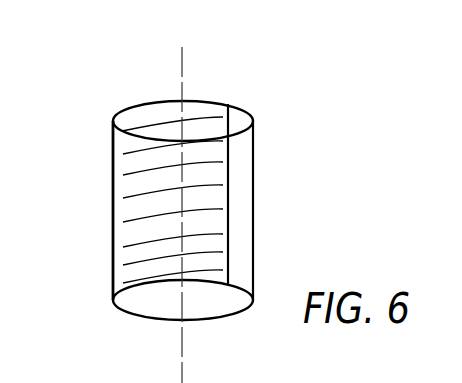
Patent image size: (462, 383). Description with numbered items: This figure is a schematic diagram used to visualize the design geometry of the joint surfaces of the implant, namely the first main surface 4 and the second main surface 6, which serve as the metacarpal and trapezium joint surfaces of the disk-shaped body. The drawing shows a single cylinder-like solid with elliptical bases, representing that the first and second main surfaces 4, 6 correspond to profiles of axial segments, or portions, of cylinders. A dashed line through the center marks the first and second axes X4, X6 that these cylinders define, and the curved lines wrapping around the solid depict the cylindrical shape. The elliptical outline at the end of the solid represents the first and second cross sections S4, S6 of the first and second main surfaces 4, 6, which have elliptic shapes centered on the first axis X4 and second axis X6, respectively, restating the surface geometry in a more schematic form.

The first main surface 4 is at (216, 186).
The second main surface 6 is at (216, 186).
The first cross section S4 is at (231, 199).
The second cross section S6 is at (247, 106).
The first axis X4 is at (217, 206).
The second axis X6 is at (217, 206).